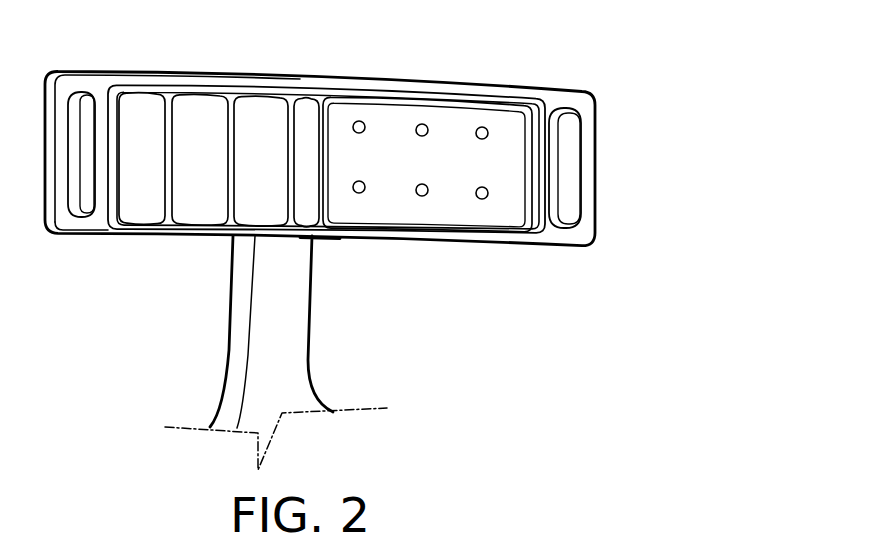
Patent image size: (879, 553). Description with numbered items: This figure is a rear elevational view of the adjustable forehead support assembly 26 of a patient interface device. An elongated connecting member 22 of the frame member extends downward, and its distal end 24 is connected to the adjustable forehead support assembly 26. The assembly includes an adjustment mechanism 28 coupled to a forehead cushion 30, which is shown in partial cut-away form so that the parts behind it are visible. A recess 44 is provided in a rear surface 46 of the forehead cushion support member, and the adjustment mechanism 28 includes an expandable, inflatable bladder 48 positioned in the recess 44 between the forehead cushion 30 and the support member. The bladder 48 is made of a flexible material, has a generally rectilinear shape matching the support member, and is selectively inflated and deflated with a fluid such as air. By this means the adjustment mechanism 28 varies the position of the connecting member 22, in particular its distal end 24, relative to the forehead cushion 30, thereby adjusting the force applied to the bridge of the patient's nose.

The connecting member 22 is at (293, 364).
The distal end 24 is at (238, 317).
The adjustable forehead support assembly 26 is at (447, 75).
The adjustment mechanism 28 is at (322, 248).
The forehead cushion 30 is at (142, 110).
The recess 44 is at (544, 104).
The rear surface 46 is at (527, 235).
The bladder 48 is at (340, 122).